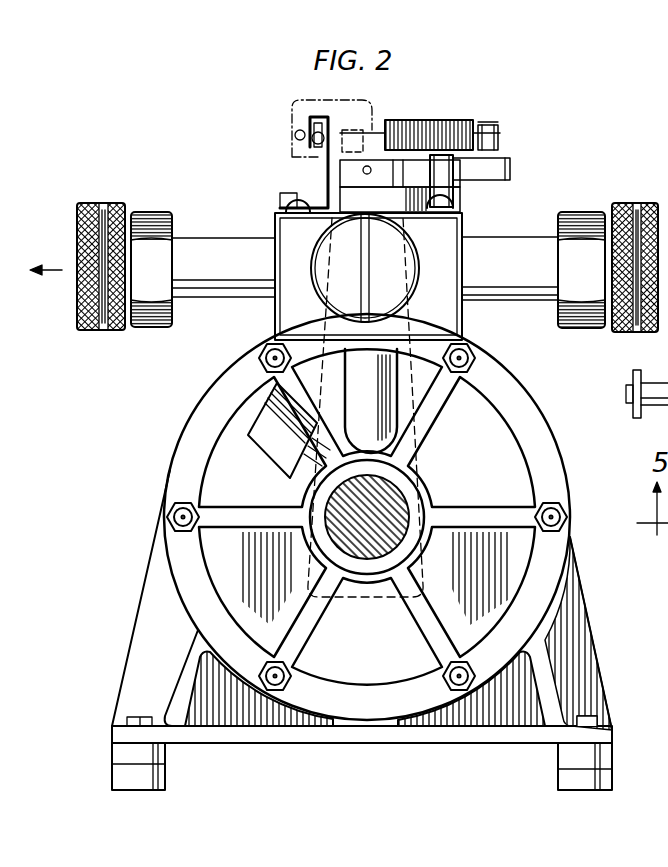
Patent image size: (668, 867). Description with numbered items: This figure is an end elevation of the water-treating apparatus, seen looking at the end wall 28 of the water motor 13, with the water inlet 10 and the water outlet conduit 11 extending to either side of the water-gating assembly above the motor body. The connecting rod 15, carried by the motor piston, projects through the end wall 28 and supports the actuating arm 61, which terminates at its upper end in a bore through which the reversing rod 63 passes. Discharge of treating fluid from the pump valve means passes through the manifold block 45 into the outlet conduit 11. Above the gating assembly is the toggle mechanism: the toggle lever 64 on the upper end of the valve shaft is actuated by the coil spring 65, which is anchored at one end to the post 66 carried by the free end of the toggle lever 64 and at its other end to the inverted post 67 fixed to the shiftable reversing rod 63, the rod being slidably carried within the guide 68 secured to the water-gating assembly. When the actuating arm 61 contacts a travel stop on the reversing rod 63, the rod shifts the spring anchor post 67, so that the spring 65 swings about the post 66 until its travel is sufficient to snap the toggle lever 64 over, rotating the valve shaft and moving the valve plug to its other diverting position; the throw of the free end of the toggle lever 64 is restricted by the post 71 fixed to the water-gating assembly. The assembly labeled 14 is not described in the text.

The water inlet 10 is at (505, 300).
The water outlet conduit 11 is at (207, 244).
The water motor 13 is at (467, 228).
The latch assembly 14 is at (472, 111).
The connecting rod 15 is at (368, 560).
The end wall 28 is at (180, 458).
The manifold block 45 is at (276, 216).
The actuating arm 61 is at (407, 396).
The reversing rod 63 is at (292, 141).
The toggle lever 64 is at (513, 171).
The coil spring 65 is at (434, 120).
The post 66 is at (500, 147).
The inverted post 67 is at (372, 131).
The guide 68 is at (320, 178).
The post 71 is at (457, 193).